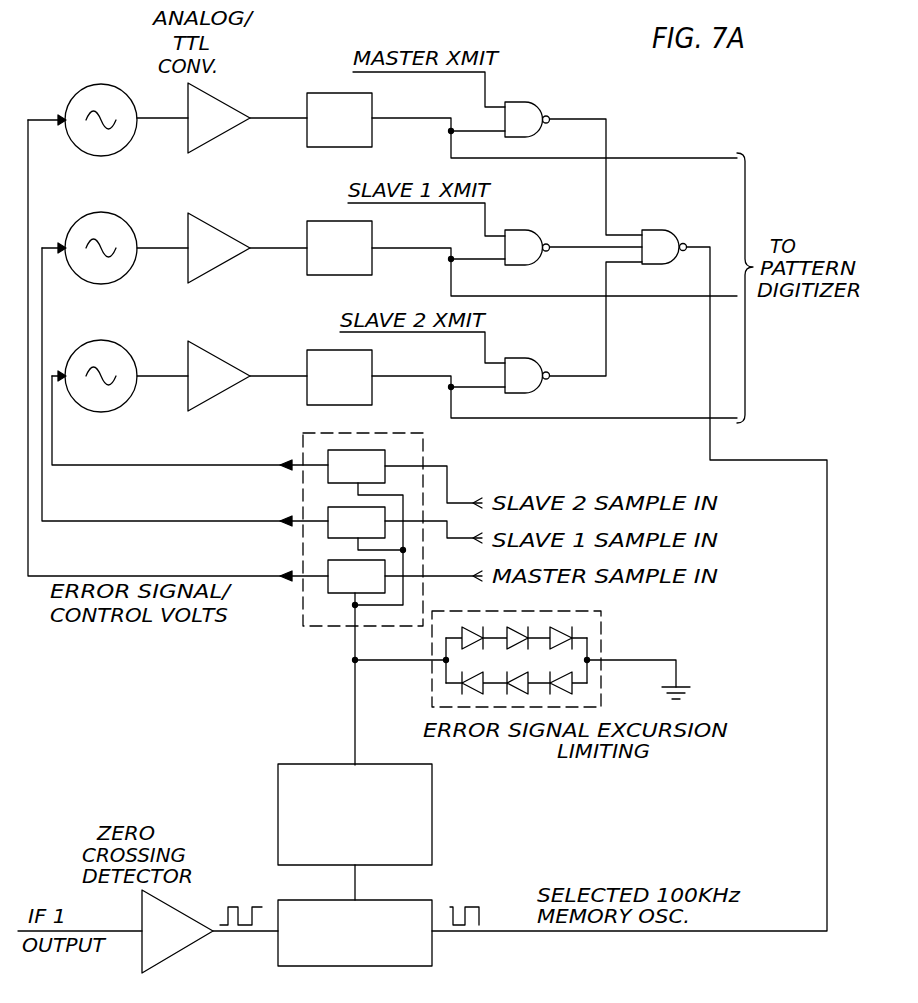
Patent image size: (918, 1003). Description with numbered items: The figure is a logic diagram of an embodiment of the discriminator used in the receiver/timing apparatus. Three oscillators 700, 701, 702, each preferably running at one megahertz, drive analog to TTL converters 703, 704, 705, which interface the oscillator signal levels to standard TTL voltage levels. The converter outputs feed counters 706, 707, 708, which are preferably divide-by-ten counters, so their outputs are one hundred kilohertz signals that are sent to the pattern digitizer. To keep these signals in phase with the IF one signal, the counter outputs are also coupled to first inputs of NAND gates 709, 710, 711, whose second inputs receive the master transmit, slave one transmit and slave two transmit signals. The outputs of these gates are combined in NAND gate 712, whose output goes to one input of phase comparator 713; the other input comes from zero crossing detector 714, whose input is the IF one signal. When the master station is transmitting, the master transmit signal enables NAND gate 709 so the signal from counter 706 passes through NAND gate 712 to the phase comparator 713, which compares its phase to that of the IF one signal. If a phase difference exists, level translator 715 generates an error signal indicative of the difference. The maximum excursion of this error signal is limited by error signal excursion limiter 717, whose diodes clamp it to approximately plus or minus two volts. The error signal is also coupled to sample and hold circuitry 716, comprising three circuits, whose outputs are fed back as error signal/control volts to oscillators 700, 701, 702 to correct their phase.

The oscillator 700 is at (124, 150).
The oscillator 701 is at (122, 281).
The oscillator 702 is at (118, 410).
The analog to TTL converter 703 is at (228, 130).
The analog to TTL converter 704 is at (228, 262).
The analog to TTL converter 705 is at (217, 393).
The counter 706 is at (307, 93).
The counter 707 is at (307, 221).
The counter 708 is at (307, 350).
The NAND gate 709 is at (528, 100).
The NAND gate 710 is at (528, 229).
The NAND gate 711 is at (528, 357).
The NAND gate 712 is at (663, 230).
The phase comparator 713 is at (432, 955).
The zero crossing detector 714 is at (185, 948).
The level translator 715 is at (432, 820).
The sample and hold circuitry 716 is at (313, 628).
The error signal excursion limiter 717 is at (601, 632).